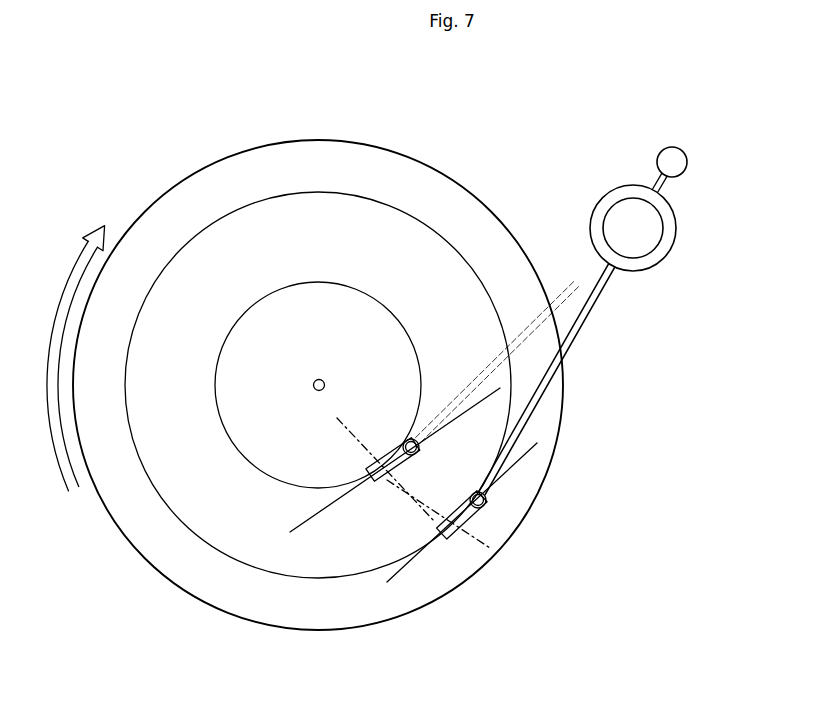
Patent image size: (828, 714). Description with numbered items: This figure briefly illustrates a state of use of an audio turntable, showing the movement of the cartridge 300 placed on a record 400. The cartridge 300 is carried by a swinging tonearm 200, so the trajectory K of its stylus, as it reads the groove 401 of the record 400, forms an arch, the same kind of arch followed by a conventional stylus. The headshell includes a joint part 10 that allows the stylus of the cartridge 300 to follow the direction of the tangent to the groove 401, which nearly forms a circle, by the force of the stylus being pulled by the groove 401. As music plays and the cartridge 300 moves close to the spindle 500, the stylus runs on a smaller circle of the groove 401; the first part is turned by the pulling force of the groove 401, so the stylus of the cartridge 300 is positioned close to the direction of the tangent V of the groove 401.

The record 400 is at (295, 158).
The groove 401 is at (283, 287).
The spindle 500 is at (313, 380).
The cartridge 300 is at (393, 438).
The joint part 10 is at (487, 498).
The tonearm 200 is at (587, 323).
The trajectory K is at (462, 537).
The tangent V is at (320, 513).